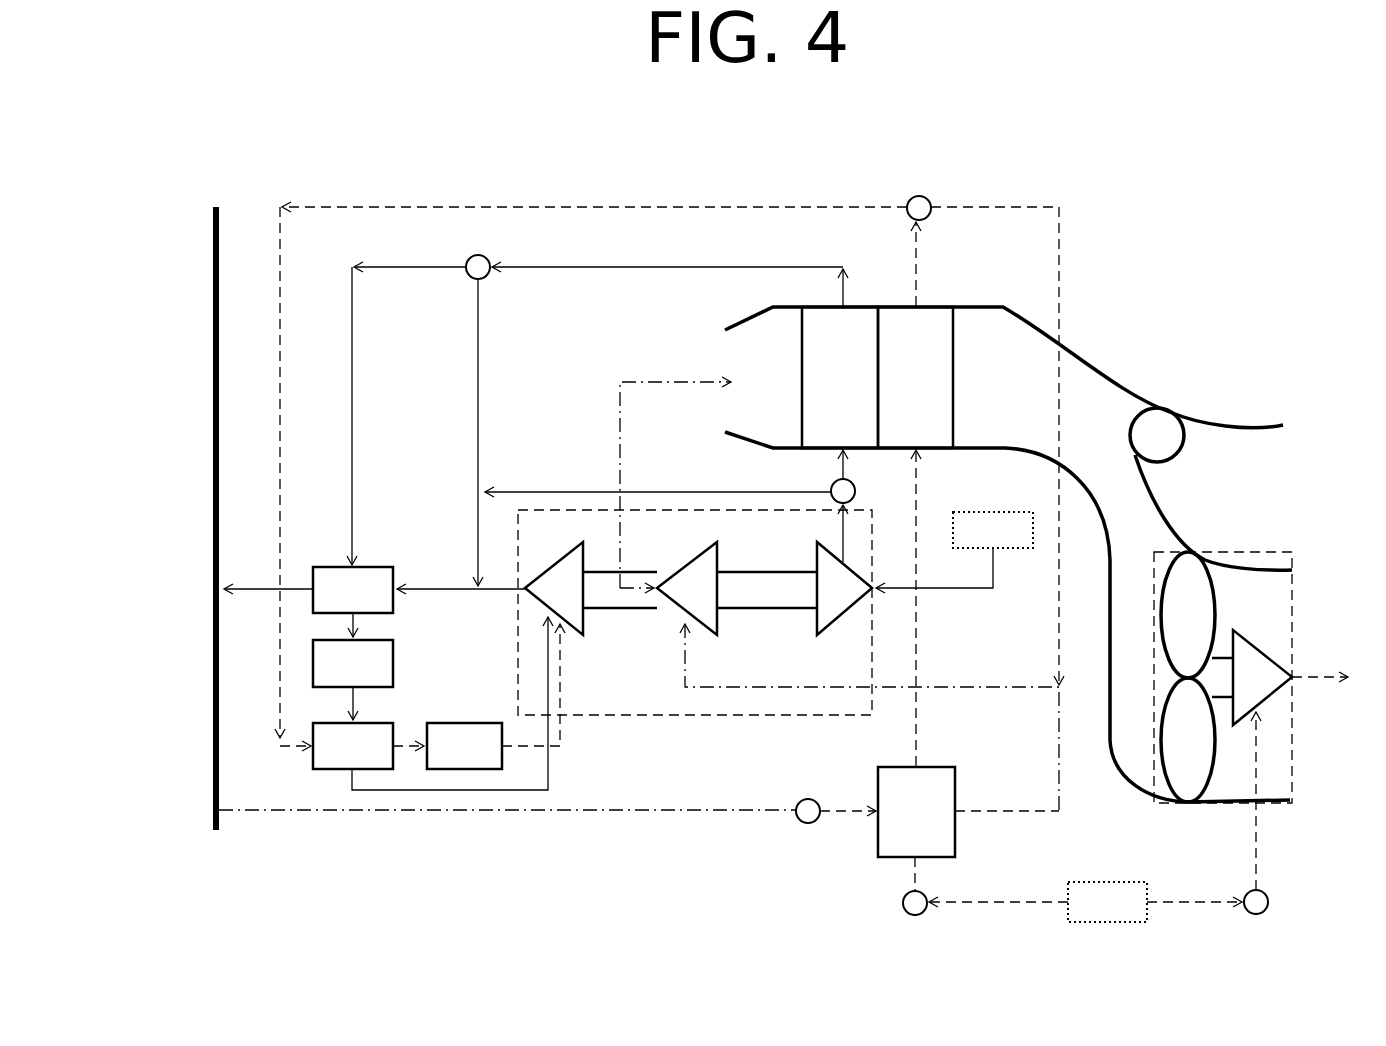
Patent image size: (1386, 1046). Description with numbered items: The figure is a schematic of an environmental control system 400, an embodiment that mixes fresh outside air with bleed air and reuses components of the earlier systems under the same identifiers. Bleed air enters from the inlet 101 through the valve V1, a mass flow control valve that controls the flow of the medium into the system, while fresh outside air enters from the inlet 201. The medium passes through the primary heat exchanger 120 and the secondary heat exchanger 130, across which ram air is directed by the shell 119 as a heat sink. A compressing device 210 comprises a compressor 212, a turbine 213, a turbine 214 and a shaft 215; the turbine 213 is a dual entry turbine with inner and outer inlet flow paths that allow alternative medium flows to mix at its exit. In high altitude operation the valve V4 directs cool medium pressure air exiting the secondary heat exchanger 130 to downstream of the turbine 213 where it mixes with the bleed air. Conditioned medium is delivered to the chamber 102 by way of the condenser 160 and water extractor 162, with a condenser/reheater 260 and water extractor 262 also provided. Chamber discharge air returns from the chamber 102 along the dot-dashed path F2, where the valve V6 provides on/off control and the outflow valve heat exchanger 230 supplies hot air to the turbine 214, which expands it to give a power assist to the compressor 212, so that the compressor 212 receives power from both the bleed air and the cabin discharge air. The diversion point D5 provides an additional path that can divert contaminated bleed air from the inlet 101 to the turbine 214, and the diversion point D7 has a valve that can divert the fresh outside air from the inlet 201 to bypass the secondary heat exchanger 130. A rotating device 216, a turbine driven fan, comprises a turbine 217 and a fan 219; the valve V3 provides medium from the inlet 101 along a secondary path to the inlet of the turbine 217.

The environmental control system 400 is at (1212, 109).
The chamber 102 is at (210, 208).
The diversion point D5 is at (910, 198).
The valve V4 is at (468, 258).
The secondary heat exchanger 130 is at (840, 377).
The primary heat exchanger 120 is at (915, 377).
The shell 119 is at (1156, 403).
The diversion point D7 is at (834, 486).
The compressing device 210 is at (768, 717).
The turbine 213 is at (555, 588).
The turbine 214 is at (687, 588).
The compressor 212 is at (843, 588).
The shaft 215 is at (758, 570).
The inlet 201 is at (954, 550).
The condenser 160 is at (374, 602).
The water extractor 162 is at (353, 680).
The condenser/reheater 260 is at (430, 703).
The water extractor 262 is at (493, 696).
The medium path F2 is at (655, 806).
The valve V6 is at (800, 802).
The outflow valve heat exchanger 230 is at (968, 828).
The valve V1 is at (905, 895).
The inlet 101 is at (1085, 902).
The valve V3 is at (1245, 895).
The fan 219 is at (1206, 560).
The rotating device 216 is at (1158, 812).
The turbine 217 is at (1280, 677).